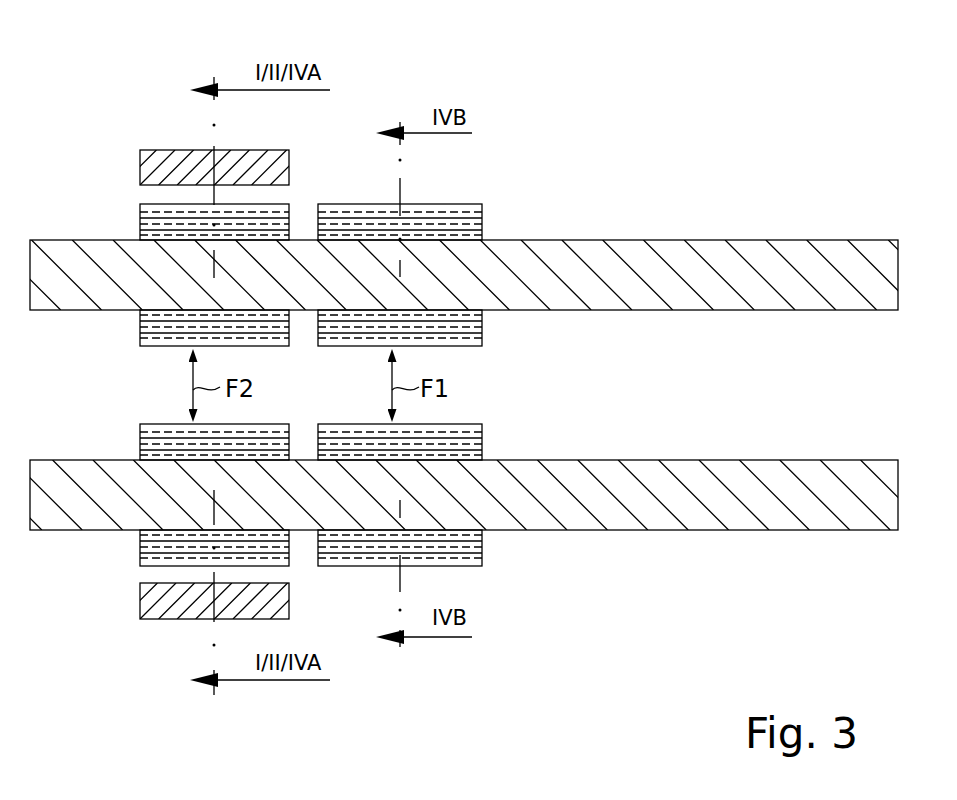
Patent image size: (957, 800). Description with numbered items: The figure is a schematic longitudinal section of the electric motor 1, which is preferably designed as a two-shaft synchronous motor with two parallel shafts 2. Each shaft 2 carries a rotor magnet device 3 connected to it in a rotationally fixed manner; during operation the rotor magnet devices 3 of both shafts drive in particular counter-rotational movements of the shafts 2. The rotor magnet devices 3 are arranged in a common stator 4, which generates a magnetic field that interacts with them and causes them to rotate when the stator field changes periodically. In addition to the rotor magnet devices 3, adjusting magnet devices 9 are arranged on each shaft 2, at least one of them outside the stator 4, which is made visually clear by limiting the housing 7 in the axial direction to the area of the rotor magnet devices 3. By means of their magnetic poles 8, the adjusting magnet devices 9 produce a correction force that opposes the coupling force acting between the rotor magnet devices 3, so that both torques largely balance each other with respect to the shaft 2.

The electric motor 1 is at (140, 80).
The shaft 2 is at (630, 262).
The rotor magnet device 3 is at (136, 334).
The stator 4 is at (143, 626).
The housing 7 is at (155, 160).
The magnetic pole 8 is at (155, 213).
The adjusting magnet device 9 is at (490, 335).